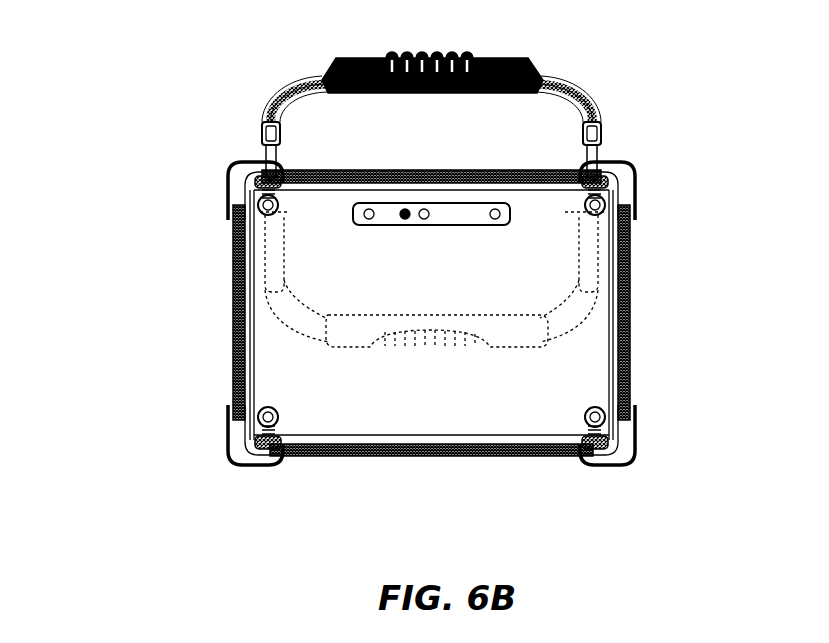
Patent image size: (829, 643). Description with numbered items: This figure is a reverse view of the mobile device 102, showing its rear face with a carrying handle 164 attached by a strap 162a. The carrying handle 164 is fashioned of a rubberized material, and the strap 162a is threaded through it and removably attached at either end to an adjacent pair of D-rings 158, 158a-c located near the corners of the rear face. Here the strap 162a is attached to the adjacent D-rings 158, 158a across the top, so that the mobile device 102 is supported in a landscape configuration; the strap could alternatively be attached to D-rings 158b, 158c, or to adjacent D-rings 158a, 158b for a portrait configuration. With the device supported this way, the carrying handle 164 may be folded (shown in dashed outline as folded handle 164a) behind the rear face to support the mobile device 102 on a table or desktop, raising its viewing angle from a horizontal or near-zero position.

The mobile device 102 is at (97, 91).
The D-ring 158 is at (264, 212).
The D-ring 158a is at (600, 212).
The D-ring 158b is at (600, 408).
The D-ring 158c is at (266, 408).
The strap 162a is at (578, 90).
The carrying handle 164 is at (535, 64).
The folded carrying handle 164a is at (360, 349).